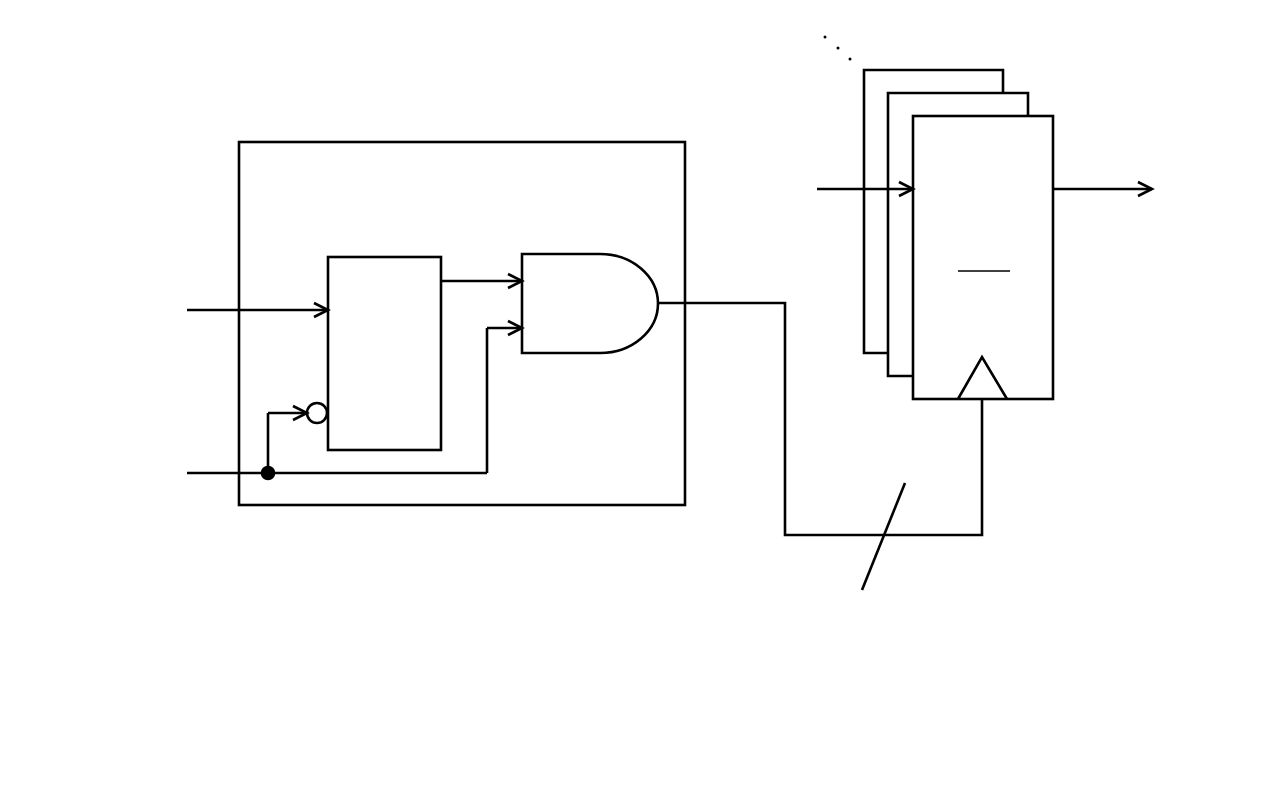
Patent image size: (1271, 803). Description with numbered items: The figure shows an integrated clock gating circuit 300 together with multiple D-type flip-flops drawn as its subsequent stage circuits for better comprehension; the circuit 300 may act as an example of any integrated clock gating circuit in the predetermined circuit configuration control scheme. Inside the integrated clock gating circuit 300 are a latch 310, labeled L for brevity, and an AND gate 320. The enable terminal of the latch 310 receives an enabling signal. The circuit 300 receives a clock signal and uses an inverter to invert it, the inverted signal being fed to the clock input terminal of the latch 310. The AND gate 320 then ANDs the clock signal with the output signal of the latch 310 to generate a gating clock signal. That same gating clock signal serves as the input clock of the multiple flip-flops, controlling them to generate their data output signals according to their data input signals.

The integrated clock gating circuit 300 is at (465, 142).
The latch 310 is at (360, 257).
The AND gate 320 is at (578, 353).